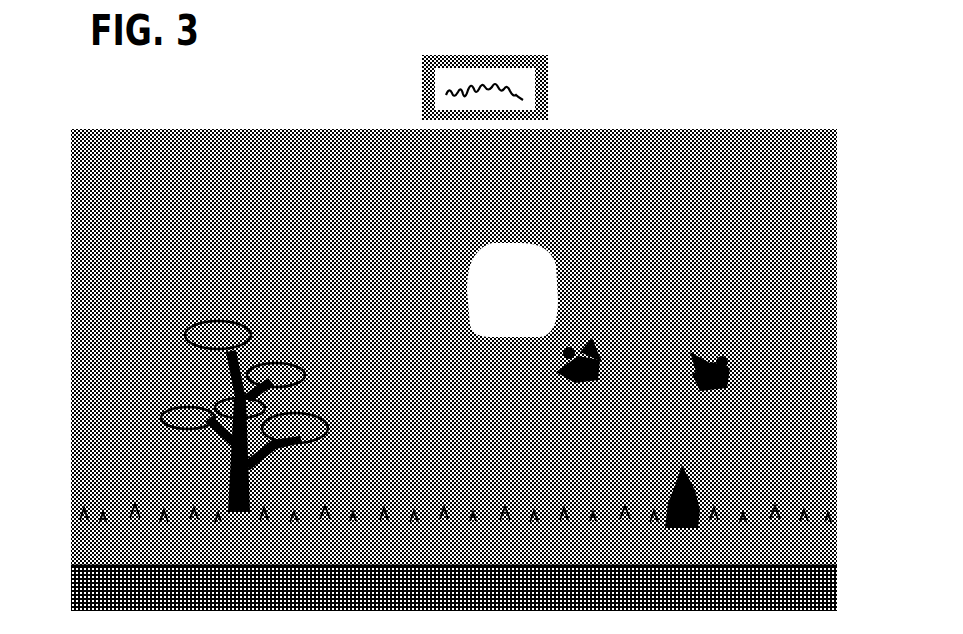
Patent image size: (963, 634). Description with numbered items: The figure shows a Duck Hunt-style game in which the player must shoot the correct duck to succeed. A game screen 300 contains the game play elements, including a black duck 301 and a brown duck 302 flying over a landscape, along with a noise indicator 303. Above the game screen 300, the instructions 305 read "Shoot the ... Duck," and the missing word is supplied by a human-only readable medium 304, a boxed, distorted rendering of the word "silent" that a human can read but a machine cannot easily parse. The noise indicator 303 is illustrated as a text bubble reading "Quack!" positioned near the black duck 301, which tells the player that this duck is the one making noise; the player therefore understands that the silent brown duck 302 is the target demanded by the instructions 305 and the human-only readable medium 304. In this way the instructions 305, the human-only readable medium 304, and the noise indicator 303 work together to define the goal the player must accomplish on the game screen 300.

The game screen 300 is at (100, 140).
The black duck 301 is at (612, 343).
The brown duck 302 is at (745, 366).
The noise indicator 303 is at (470, 300).
The human-only readable medium 304 is at (491, 70).
The instructions 305 is at (298, 72).